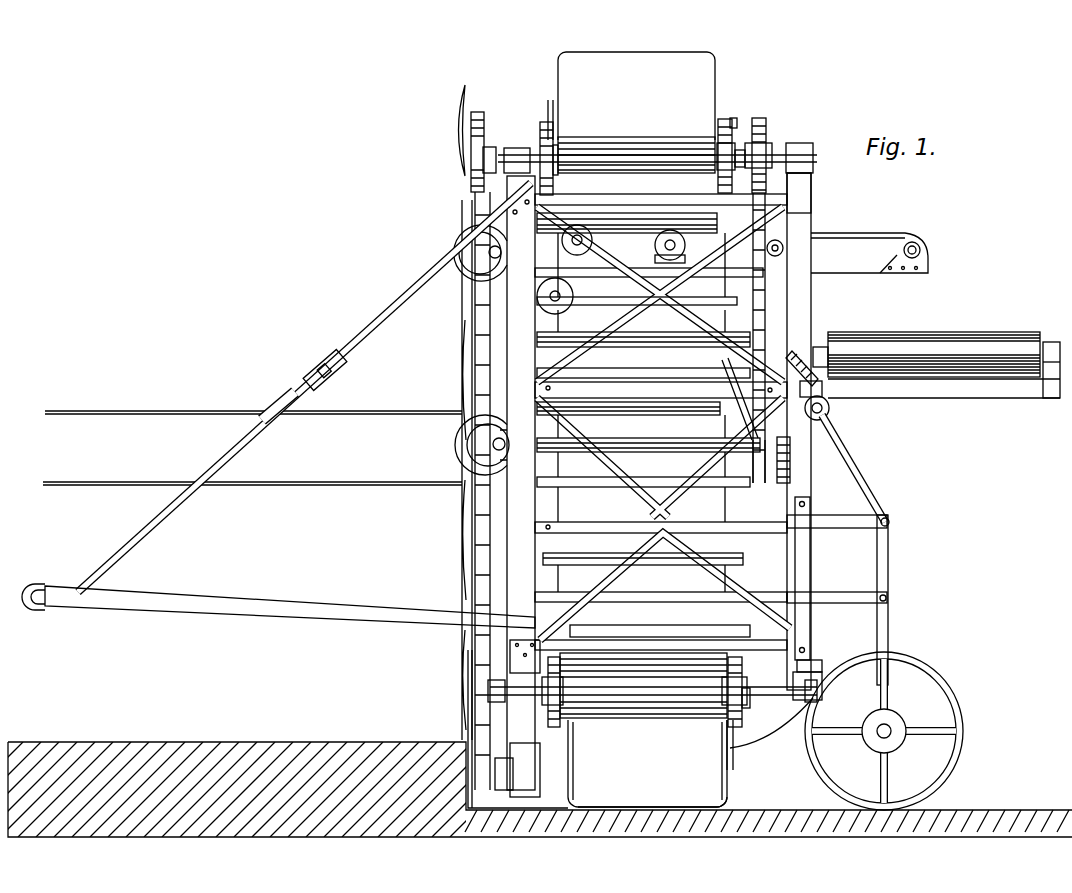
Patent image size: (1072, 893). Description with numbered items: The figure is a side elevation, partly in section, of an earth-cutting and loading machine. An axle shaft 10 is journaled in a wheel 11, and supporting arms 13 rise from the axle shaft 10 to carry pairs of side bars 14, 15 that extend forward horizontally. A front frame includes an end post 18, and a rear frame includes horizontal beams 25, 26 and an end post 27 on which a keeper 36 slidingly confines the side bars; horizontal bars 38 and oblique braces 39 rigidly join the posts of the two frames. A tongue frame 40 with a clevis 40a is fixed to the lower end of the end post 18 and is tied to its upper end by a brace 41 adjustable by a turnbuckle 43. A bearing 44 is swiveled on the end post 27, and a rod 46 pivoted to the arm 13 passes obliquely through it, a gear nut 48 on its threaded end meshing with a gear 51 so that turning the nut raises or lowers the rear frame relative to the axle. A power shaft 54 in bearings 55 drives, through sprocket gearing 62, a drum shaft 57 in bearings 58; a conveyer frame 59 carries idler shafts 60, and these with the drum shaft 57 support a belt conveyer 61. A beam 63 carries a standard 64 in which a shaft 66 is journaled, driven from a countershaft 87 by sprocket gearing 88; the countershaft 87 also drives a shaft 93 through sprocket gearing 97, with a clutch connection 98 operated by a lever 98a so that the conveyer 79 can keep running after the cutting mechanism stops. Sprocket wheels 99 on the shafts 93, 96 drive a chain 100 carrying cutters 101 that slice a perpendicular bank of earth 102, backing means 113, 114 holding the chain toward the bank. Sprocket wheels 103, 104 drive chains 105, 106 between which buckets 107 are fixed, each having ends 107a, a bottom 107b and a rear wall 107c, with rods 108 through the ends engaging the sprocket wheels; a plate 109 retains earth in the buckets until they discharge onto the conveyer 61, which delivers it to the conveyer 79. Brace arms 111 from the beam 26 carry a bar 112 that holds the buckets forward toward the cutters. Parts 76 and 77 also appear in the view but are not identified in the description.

The axle shaft 10 is at (888, 733).
The wheel 11 is at (948, 713).
The supporting arm 13 is at (890, 620).
The side bar 14 is at (860, 526).
The side bar 15 is at (848, 600).
The end post 18 is at (522, 483).
The horizontal beam 25 is at (812, 190).
The horizontal beam 26 is at (822, 665).
The end post 27 is at (812, 487).
The keeper 36 is at (810, 567).
The horizontal bar 38 is at (635, 204).
The oblique brace 39 is at (635, 330).
The tongue frame 40 is at (310, 608).
The clevis 40a is at (37, 584).
The brace 41 is at (397, 325).
The turnbuckle 43 is at (322, 365).
The bearing 44 is at (802, 369).
The rod 46 is at (857, 476).
The gear nut 48 is at (823, 390).
The gear 51 is at (831, 410).
The power shaft 54 is at (505, 444).
The bearing 55 is at (468, 457).
The drum shaft 57 is at (501, 253).
The bearing 58 is at (480, 254).
The conveyer frame 59 is at (858, 268).
The idler shaft 60 is at (655, 247).
The belt conveyer 61 is at (869, 240).
The sprocket gearing 62 is at (468, 336).
The beam 63 is at (944, 388).
The standard 64 is at (1053, 388).
The shaft 66 is at (820, 350).
The strut attachment 76 is at (518, 198).
The bolt plate 77 is at (525, 658).
The conveyer 79 is at (929, 342).
The countershaft 87 is at (662, 447).
The sprocket gearing 88 is at (782, 482).
The shaft 93 is at (792, 143).
The shaft 96 is at (748, 700).
The sprocket gearing 97 is at (763, 120).
The clutch connection 98 is at (755, 448).
The lever 98a is at (722, 368).
The sprocket wheel 99 is at (484, 129).
The chain 100 is at (478, 116).
The cutter 101 is at (461, 130).
The bank of earth 102 is at (488, 762).
The sprocket wheel 103 is at (535, 720).
The sprocket wheel 104 is at (773, 681).
The chain 105 is at (552, 135).
The chain 106 is at (727, 110).
The bucket 107 is at (642, 429).
The bucket end 107a is at (569, 763).
The bucket bottom 107b is at (647, 796).
The rear wall 107c is at (705, 796).
The rod 108 is at (542, 128).
The sheet metal plate 109 is at (680, 148).
The brace arm 111 is at (771, 735).
The bar 112 is at (735, 772).
The backing means 113 is at (528, 758).
The backing means 114 is at (503, 775).